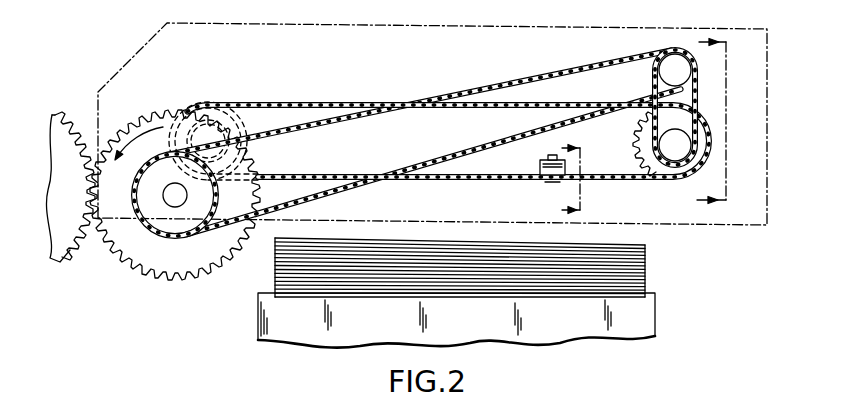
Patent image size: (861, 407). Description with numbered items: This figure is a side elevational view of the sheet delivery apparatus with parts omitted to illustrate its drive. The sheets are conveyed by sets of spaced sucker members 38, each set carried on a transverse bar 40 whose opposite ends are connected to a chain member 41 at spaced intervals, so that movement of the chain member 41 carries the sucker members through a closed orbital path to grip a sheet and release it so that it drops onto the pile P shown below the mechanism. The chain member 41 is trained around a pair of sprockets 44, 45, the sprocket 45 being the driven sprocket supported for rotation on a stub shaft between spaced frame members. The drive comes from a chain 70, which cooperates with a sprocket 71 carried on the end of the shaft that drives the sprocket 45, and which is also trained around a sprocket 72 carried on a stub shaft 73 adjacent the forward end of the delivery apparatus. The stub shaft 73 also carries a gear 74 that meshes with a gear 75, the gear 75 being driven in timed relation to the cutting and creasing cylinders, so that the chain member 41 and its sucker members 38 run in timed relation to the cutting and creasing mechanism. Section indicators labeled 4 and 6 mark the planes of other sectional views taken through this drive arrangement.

The sucker member 38 is at (550, 188).
The bar 40 is at (538, 162).
The chain member 41 is at (310, 101).
The sprocket 44 is at (236, 106).
The sprocket 45 is at (712, 156).
The chain 70 is at (472, 88).
The sprocket 71 is at (673, 68).
The sprocket 72 is at (178, 222).
The stub shaft 73 is at (168, 202).
The gear 74 is at (203, 262).
The gear 75 is at (72, 256).
The section line 4- 4 is at (704, 121).
The section line 6- 6 is at (564, 178).
The pile P is at (645, 273).